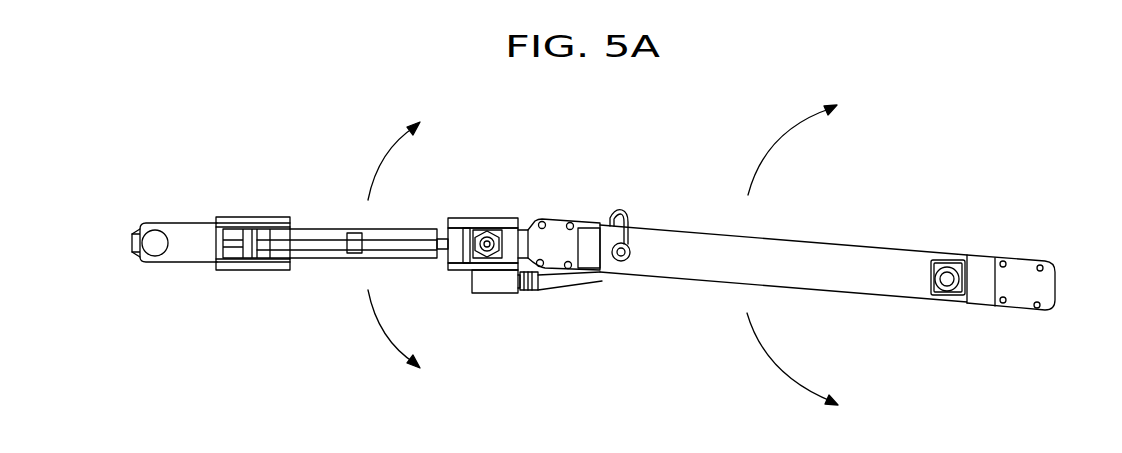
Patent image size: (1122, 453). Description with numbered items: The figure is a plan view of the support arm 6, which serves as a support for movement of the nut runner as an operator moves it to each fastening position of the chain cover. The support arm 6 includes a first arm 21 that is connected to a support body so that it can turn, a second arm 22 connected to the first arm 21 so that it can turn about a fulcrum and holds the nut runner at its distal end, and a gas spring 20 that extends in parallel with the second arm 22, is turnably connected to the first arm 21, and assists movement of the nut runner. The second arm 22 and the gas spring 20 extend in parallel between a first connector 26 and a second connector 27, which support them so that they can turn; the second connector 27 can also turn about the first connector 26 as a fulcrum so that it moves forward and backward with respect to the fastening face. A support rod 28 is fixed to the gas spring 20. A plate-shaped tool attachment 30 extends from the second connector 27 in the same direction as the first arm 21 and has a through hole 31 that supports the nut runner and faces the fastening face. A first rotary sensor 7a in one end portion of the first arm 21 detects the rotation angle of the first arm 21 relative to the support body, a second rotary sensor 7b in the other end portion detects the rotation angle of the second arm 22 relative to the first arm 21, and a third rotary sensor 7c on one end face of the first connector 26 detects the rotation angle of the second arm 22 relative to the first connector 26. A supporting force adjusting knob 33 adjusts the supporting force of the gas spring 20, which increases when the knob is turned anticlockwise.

The support arm 6 is at (751, 244).
The first rotary sensor 7a is at (1021, 276).
The second rotary sensor 7b is at (555, 237).
The third rotary sensor 7c is at (500, 278).
The gas spring 20 is at (362, 203).
The first arm 21 is at (872, 265).
The second arm 22 is at (320, 257).
The first connector 26 is at (505, 218).
The second connector 27 is at (243, 217).
The support rod 28 is at (413, 230).
The tool attachment 30 is at (197, 249).
The through hole 31 is at (155, 243).
The supporting force adjusting knob 33 is at (490, 263).